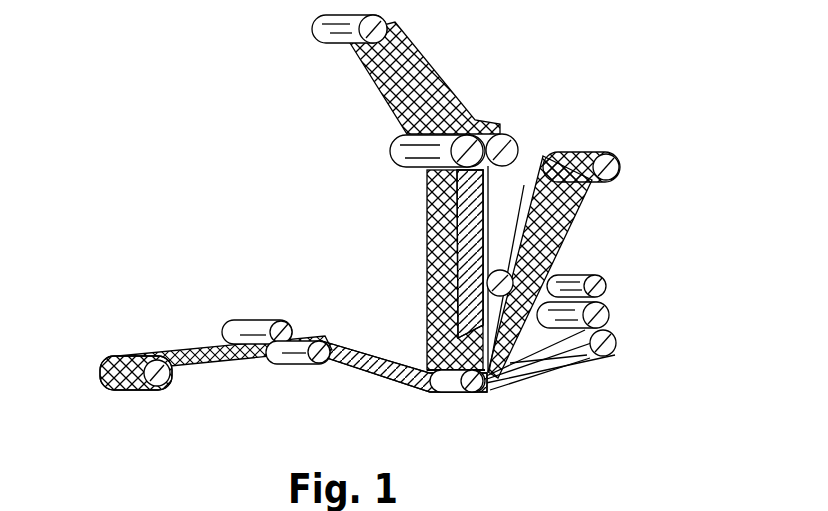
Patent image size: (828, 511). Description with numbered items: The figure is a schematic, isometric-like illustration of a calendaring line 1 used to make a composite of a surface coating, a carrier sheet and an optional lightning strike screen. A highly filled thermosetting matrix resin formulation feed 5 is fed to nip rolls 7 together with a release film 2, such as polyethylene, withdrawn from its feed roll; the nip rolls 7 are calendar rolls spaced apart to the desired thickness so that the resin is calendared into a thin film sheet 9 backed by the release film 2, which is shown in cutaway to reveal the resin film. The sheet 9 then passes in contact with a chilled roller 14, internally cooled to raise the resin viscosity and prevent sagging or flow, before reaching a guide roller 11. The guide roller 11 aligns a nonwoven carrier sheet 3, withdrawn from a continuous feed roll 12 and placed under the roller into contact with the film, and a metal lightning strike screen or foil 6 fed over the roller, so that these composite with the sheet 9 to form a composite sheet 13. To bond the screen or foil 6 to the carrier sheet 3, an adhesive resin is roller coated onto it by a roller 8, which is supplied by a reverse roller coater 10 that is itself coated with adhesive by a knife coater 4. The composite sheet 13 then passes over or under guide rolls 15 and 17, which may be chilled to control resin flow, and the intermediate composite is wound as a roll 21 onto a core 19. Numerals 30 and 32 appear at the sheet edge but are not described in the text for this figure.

The calendaring line 1 is at (276, 185).
The release film 2 is at (400, 100).
The nonwoven carrier sheet 3 is at (550, 223).
The knife coater 4 is at (577, 278).
The matrix resin formulation feed 5 is at (477, 128).
The metal lightning strike screen or foil 6 is at (560, 350).
The nip rolls 7 is at (430, 182).
The adhesive roller 8 is at (602, 315).
The thin film sheet 9 is at (450, 258).
The reverse roller coater 10 is at (601, 288).
The guide roller 11 is at (497, 378).
The continuous feed roll 12 is at (613, 168).
The composite sheet 13 is at (382, 368).
The chilled roller 14 is at (524, 185).
The guide roll 15 is at (293, 357).
The guide roll 17 is at (250, 328).
The core 19 is at (123, 358).
The rolled composite 21 is at (110, 385).
The element 30 is at (50, 510).
The element 32 is at (655, 510).